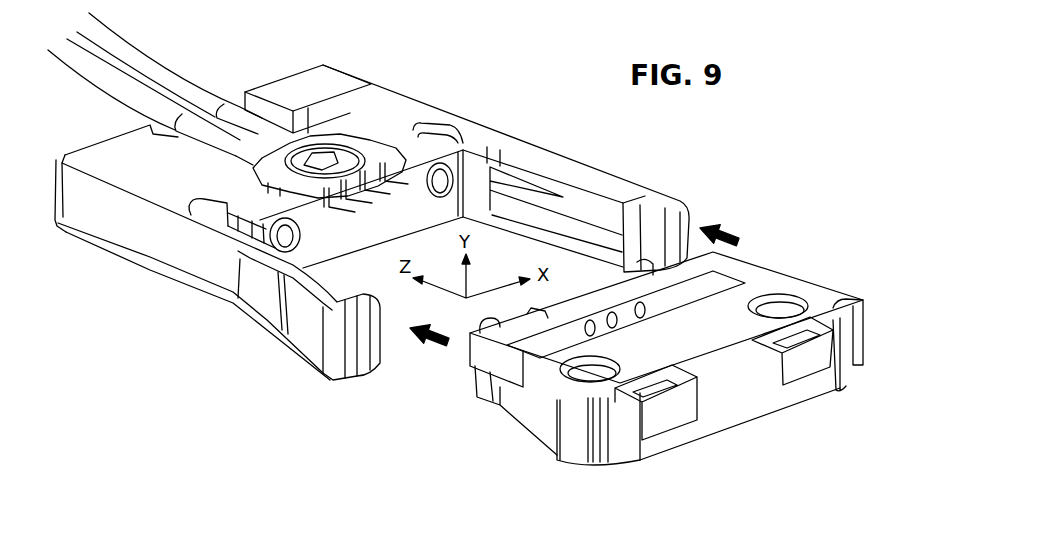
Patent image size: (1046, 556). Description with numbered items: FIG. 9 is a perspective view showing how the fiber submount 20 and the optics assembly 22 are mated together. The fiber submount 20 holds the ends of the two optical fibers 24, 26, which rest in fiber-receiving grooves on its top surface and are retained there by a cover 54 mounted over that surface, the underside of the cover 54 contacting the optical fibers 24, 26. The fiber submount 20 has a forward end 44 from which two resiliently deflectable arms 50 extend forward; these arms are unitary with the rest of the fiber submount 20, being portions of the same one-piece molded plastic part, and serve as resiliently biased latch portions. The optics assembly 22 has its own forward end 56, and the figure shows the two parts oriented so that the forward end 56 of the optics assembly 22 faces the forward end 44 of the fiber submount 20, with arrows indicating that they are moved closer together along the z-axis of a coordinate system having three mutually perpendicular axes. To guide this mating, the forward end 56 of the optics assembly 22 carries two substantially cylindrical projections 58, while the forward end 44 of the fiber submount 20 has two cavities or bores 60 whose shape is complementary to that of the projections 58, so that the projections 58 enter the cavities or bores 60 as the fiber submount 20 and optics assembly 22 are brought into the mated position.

The fiber submount 20 is at (476, 67).
The optics assembly 22 is at (460, 430).
The optical fiber 24 is at (173, 73).
The optical fiber 26 is at (117, 98).
The forward end 44 is at (340, 247).
The resiliently deflectable arms 50 is at (636, 180).
The cover 54 is at (347, 142).
The forward end 56 is at (594, 300).
The substantially cylindrical projections 58 is at (479, 318).
The cavities or bores 60 is at (283, 232).